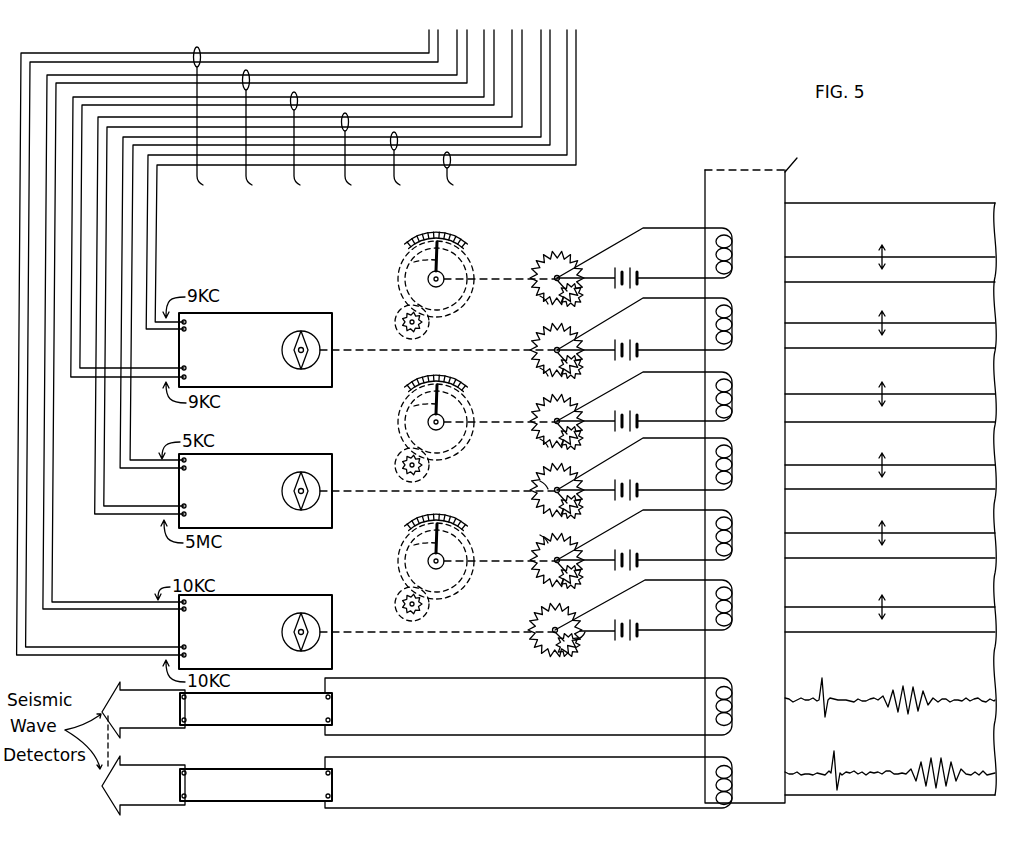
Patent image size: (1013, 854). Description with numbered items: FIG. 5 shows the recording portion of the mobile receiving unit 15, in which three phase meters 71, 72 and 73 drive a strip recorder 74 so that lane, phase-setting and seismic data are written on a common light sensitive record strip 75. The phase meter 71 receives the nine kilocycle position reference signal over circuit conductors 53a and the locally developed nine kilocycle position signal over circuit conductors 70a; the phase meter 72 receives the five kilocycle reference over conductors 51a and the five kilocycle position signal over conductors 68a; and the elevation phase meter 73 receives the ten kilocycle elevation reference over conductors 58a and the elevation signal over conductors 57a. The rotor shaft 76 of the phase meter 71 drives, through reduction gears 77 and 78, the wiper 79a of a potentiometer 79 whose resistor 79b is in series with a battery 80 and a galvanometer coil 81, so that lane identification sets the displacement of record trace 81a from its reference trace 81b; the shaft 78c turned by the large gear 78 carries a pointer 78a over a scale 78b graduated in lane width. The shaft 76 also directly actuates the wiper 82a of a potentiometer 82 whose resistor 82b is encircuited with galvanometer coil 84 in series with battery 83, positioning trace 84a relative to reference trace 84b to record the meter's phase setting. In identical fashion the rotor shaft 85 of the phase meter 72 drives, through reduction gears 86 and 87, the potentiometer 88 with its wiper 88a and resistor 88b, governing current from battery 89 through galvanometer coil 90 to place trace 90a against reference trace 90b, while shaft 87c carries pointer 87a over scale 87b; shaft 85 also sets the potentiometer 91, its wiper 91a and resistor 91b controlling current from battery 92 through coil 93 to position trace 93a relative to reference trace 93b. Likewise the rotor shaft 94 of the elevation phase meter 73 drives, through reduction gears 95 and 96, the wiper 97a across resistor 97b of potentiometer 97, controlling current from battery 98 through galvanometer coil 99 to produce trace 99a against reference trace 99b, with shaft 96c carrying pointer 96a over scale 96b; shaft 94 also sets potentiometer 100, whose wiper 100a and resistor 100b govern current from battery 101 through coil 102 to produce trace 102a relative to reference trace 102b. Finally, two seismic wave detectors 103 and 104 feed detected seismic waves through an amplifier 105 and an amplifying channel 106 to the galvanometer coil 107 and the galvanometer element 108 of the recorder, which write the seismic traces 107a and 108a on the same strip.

The mobile receiving unit 15 is at (394, 342).
The circuit conductors 58a is at (216, 122).
The circuit conductors 57a is at (264, 133).
The circuit conductors 53a is at (313, 144).
The circuit conductors 51a is at (365, 155).
The circuit conductors 68a is at (413, 164).
The circuit conductors 70a is at (467, 174).
The phase meter 71 is at (317, 314).
The phase meter 72 is at (317, 454).
The elevation phase meter 73 is at (317, 595).
The strip recorder 74 is at (705, 178).
The record strip 75 is at (885, 205).
The rotor shaft 76 is at (364, 348).
The reduction gear 77 is at (405, 313).
The large gear 78 is at (440, 310).
The pointer 78a is at (414, 263).
The scale 78b is at (458, 246).
The shaft 78c is at (480, 279).
The potentiometer 79 is at (560, 246).
The wiper 79a is at (588, 298).
The resistor 79b is at (538, 298).
The energizing battery 80 is at (637, 272).
The galvanometer coil 81 is at (732, 271).
The record trace 81a is at (859, 257).
The reference trace 81b is at (954, 282).
The potentiometer 82 is at (523, 344).
The wiper 82a is at (586, 370).
The potentiometer resistor 82b is at (542, 373).
The energizing battery 83 is at (636, 345).
The galvanometer coil 84 is at (732, 343).
The record trace 84a is at (866, 323).
The reference trace 84b is at (956, 348).
The rotor shaft 85 is at (370, 493).
The reduction gear 86 is at (428, 470).
The large gear 87 is at (400, 440).
The pointer 87a is at (414, 407).
The scale 87b is at (456, 388).
The shaft 87c is at (478, 434).
The potentiometer 88 is at (523, 409).
The pawl gear 88a is at (588, 440).
The contact arm 88b is at (540, 439).
The battery 89 is at (637, 427).
The galvanometer coil 90 is at (732, 414).
The record trace 90a is at (866, 394).
The reference trace 90b is at (959, 422).
The potentiometer 91 is at (524, 469).
The pawl gear 91a is at (584, 511).
The contact arm 91b is at (538, 480).
The battery 92 is at (637, 494).
The galvanometer coil 93 is at (732, 484).
The record trace 93a is at (866, 465).
The reference trace 93b is at (959, 489).
The rotor shaft 94 is at (366, 630).
The reduction gear 95 is at (428, 608).
The large gear 96 is at (448, 576).
The pointer 96a is at (414, 548).
The scale 96b is at (435, 515).
The shaft 96c is at (500, 562).
The potentiometer 97 is at (524, 544).
The wiper 97a is at (585, 582).
The contact arm 97b is at (540, 535).
The energizing battery 98 is at (639, 555).
The galvanometer coil 99 is at (732, 554).
The record trace 99a is at (866, 533).
The reference trace 99b is at (957, 558).
The potentiometer 100 is at (524, 646).
The contact arm 100a is at (582, 638).
The pawl gear 100b is at (552, 652).
The battery 101 is at (637, 630).
The galvanometer coil 102 is at (732, 625).
The record trace 102a is at (871, 607).
The reference trace 102b is at (962, 632).
The seismic wave detector 103 is at (143, 710).
The seismic wave detector 104 is at (143, 785).
The amplifier 105 is at (333, 710).
The amplifying channel 106 is at (333, 786).
The galvanometer coil 107 is at (732, 722).
The seismic trace 107a is at (860, 700).
The galvanometer element 108 is at (732, 802).
The seismic trace 108a is at (885, 773).